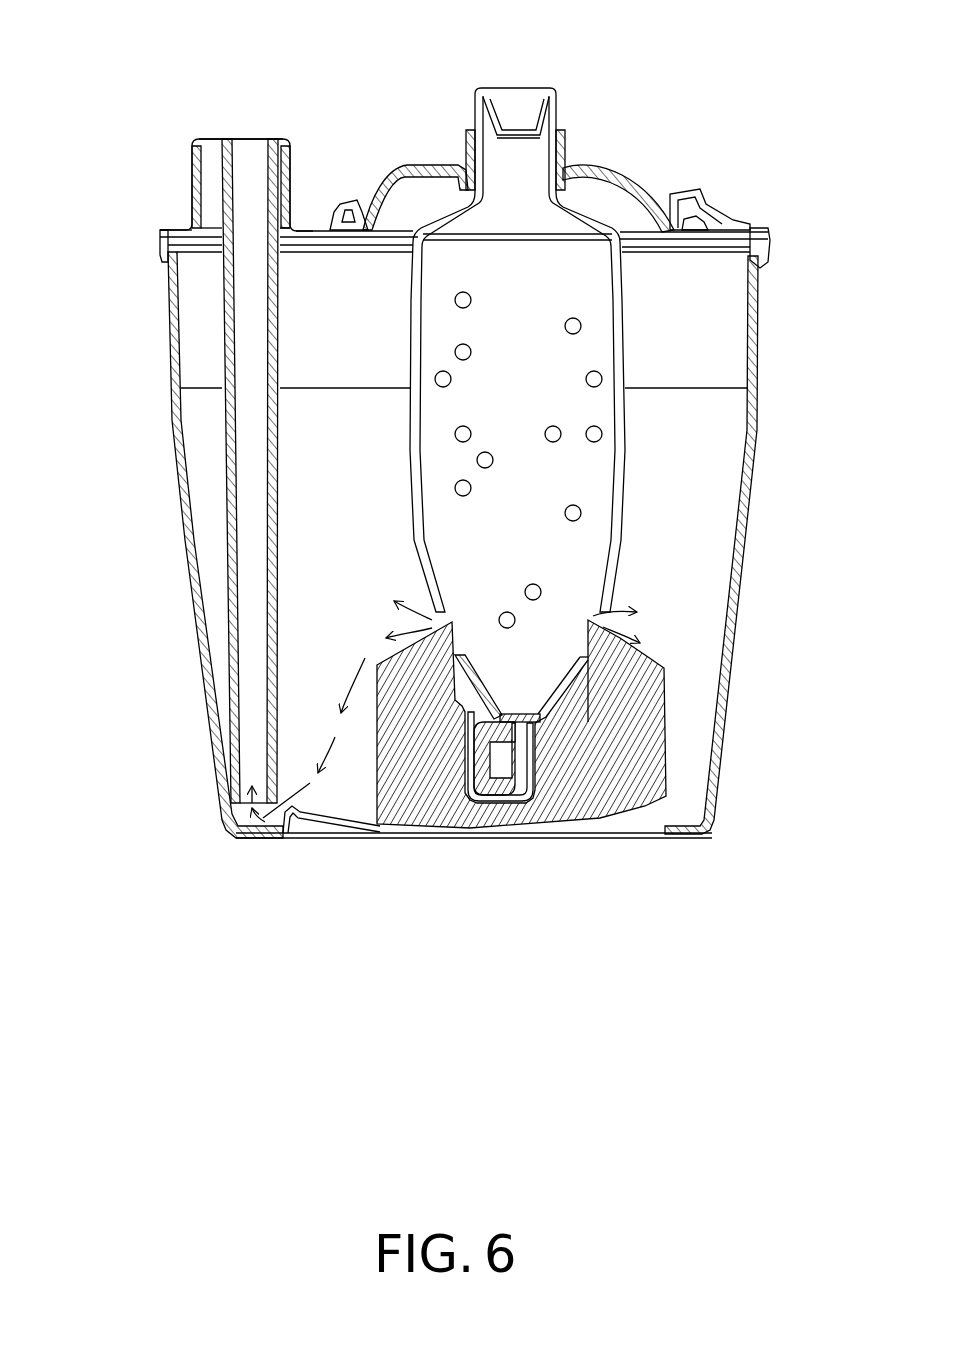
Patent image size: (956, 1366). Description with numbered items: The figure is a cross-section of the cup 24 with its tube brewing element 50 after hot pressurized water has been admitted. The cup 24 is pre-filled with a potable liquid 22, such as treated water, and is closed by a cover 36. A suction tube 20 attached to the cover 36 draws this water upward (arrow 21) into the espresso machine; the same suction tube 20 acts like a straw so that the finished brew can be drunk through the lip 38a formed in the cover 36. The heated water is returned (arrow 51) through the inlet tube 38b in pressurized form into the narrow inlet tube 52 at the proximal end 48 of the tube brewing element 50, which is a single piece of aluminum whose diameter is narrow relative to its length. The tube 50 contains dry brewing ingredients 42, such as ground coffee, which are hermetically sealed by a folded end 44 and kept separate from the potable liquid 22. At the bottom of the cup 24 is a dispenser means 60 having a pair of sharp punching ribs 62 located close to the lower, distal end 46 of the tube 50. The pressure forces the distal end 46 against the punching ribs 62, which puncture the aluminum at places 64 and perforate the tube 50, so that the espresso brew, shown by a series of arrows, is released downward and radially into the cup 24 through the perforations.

The suction tube 20 is at (232, 650).
The arrow 21 is at (243, 120).
The potable liquid 22 is at (705, 417).
The cup 24 is at (140, 455).
The cover 36 is at (658, 166).
The lip 38a is at (192, 174).
The inlet tube 38b is at (570, 140).
The dry brewing ingredients 42 is at (582, 511).
The folded end 44 is at (470, 802).
The distal end 46 is at (617, 610).
The proximal end 48 is at (626, 333).
The tube brewing element 50 is at (404, 470).
The arrow 51 is at (514, 106).
The inlet tube 52 is at (472, 110).
The dispenser means 60 is at (607, 828).
The punching ribs 62 is at (453, 650).
The puncture places 64 is at (590, 606).